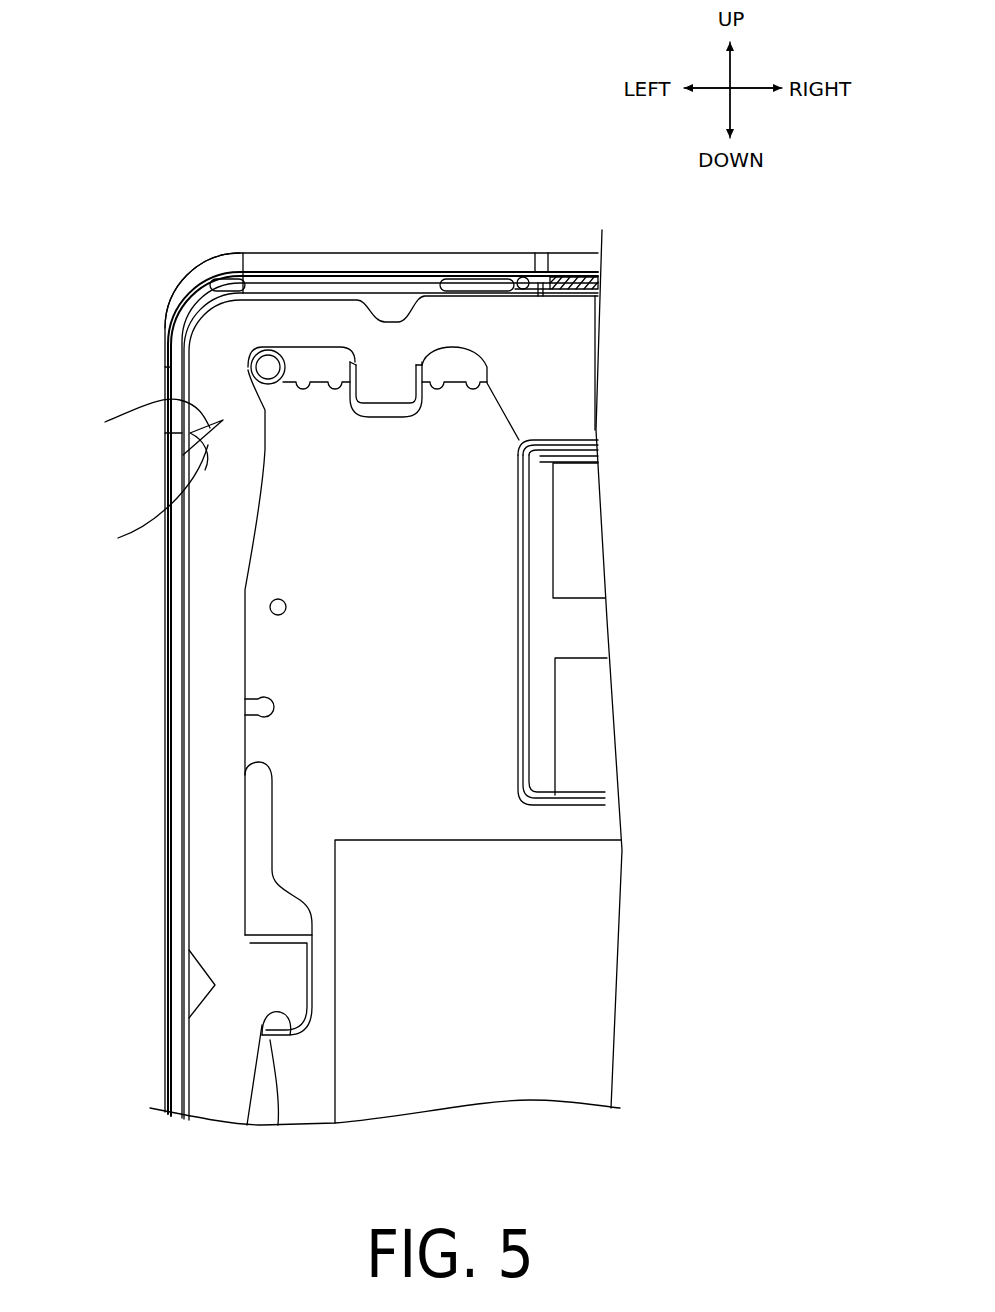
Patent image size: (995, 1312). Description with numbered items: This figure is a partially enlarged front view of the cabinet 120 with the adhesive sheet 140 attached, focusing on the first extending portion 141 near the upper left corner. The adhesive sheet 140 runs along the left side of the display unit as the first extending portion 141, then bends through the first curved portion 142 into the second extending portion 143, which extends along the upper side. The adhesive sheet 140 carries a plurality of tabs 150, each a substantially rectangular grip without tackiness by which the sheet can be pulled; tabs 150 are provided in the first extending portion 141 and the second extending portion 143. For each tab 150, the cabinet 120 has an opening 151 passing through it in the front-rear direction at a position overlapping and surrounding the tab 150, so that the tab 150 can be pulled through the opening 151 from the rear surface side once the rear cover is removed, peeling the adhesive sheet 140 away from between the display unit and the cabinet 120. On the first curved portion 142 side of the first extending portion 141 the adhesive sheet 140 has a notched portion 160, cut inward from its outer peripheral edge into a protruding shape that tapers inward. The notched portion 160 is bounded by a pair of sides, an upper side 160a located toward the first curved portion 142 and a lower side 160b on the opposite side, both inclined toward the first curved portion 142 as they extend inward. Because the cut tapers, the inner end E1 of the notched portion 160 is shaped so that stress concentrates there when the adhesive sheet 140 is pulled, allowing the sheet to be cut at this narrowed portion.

The cabinet 120 is at (150, 201).
The adhesive sheet 140 is at (188, 610).
The first extending portion 141 is at (200, 742).
The first curved portion 142 is at (210, 336).
The second extending portion 143 is at (527, 319).
The tab 150 is at (392, 376).
The opening 151 is at (421, 383).
The notched portion 160 is at (168, 466).
The upper side 160a is at (126, 418).
The lower side 160b is at (128, 500).
The inner end E1 is at (230, 412).